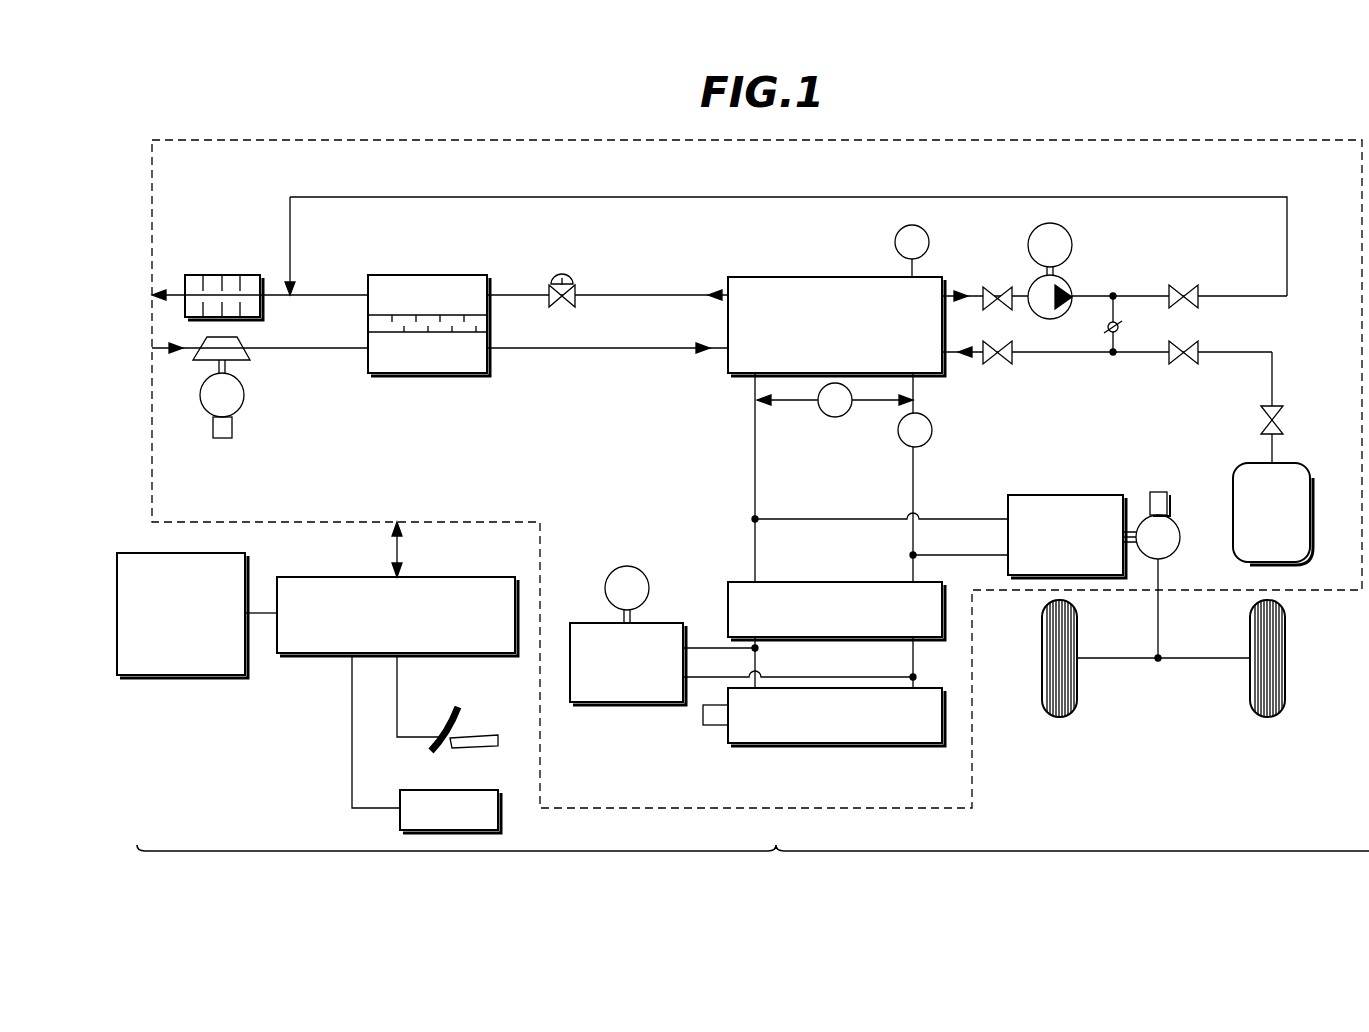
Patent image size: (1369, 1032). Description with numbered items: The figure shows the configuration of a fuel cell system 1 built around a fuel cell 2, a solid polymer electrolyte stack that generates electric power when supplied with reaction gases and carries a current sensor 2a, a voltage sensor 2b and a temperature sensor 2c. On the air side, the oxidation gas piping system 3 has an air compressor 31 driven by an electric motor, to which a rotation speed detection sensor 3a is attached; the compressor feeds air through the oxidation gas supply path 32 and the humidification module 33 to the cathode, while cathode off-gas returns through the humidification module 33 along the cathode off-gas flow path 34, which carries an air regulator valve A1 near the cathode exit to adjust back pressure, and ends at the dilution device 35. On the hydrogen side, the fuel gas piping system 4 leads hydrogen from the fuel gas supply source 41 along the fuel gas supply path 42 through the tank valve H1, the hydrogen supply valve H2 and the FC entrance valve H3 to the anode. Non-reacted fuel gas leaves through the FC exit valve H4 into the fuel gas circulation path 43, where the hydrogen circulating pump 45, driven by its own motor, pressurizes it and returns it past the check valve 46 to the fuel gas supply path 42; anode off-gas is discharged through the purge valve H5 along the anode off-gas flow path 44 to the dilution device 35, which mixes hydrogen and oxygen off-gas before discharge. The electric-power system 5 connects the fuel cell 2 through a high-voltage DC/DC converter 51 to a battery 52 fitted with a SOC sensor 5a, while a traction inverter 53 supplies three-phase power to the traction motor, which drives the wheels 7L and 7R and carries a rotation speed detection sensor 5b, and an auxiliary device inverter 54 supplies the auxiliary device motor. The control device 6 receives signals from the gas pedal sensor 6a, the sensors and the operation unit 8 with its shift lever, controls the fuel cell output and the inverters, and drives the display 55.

The fuel cell system 1 is at (753, 866).
The fuel cell 2 is at (765, 277).
The current sensor 2a is at (932, 428).
The voltage sensor 2b is at (835, 418).
The temperature sensor 2c is at (894, 240).
The oxidation gas piping system 3 is at (341, 380).
The rotation speed detection sensor 3a is at (222, 440).
The air compressor 31 is at (250, 350).
The oxidation gas supply path 32 is at (522, 350).
The humidification module 33 is at (452, 376).
The cathode off-gas flow path 34 is at (634, 292).
The dilution device 35 is at (228, 272).
The air regulator valve A1 is at (566, 276).
The fuel gas piping system 4 is at (1129, 394).
The fuel gas supply source 41 is at (1232, 500).
The fuel gas supply path 42 is at (1098, 354).
The fuel gas circulation path 43 is at (1098, 298).
The anode off-gas flow path 44 is at (1238, 295).
The hydrogen circulating pump 45 is at (1075, 288).
The check valve 46 is at (1121, 327).
The tank valve H1 is at (1289, 407).
The hydrogen supply valve H2 is at (1183, 365).
The FC entrance valve H3 is at (997, 365).
The FC exit valve H4 is at (997, 286).
The purge valve H5 is at (1183, 285).
The electric-power system 5 is at (868, 618).
The SOC sensor 5a is at (715, 727).
The rotation speed detection sensor 5b is at (1152, 490).
The high-voltage DC/DC converter 51 is at (835, 582).
The battery 52 is at (835, 746).
The traction inverter 53 is at (1050, 495).
The auxiliary device inverter 54 is at (590, 623).
The display 55 is at (418, 790).
The control device 6 is at (320, 656).
The gas pedal sensor 6a is at (455, 722).
The wheel 7L is at (1048, 717).
The wheel 7R is at (1258, 717).
The operation unit 8 is at (170, 678).